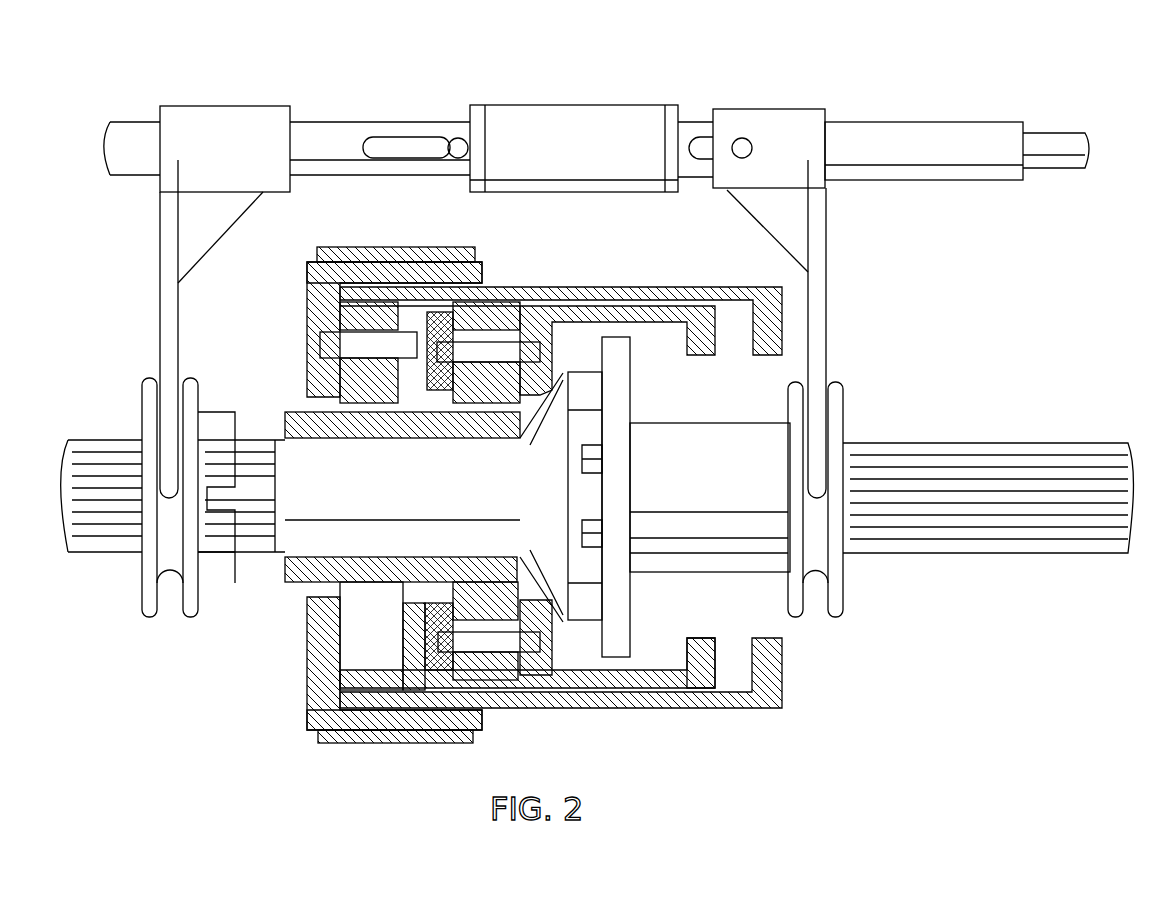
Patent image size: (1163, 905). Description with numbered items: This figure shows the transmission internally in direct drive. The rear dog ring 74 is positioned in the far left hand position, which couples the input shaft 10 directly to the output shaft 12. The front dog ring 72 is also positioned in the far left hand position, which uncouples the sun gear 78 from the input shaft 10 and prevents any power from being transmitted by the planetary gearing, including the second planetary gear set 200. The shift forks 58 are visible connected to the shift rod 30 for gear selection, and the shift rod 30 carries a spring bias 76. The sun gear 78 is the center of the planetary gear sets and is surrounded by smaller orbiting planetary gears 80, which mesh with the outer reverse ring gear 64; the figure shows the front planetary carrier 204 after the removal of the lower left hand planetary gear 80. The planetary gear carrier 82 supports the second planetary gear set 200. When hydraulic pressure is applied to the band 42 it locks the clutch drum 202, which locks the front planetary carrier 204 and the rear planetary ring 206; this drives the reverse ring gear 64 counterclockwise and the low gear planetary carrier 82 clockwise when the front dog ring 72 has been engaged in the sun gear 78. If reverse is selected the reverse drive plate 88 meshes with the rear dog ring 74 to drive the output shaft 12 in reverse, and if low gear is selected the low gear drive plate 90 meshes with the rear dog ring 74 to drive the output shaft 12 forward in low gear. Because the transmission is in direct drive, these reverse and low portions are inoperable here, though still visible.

The input shaft 10 is at (80, 450).
The output shaft 12 is at (945, 540).
The shift rod 30 is at (905, 135).
The band 42 is at (470, 252).
The shift forks 58 is at (235, 125).
The reverse ring gear 64 is at (690, 287).
The front dog ring 72 is at (220, 575).
The rear dog ring 74 is at (763, 470).
The spring bias 76 is at (530, 105).
The sun gear 78 is at (410, 553).
The planetary gears 80 is at (507, 665).
The planetary gear carrier 82 is at (580, 306).
The reverse drive plate 88 is at (782, 675).
The low gear drive plate 90 is at (705, 665).
The second planetary gear set 200 is at (375, 672).
The clutch drum 202 is at (320, 300).
The front planetary carrier 204 is at (357, 668).
The rear planetary ring 206 is at (412, 250).